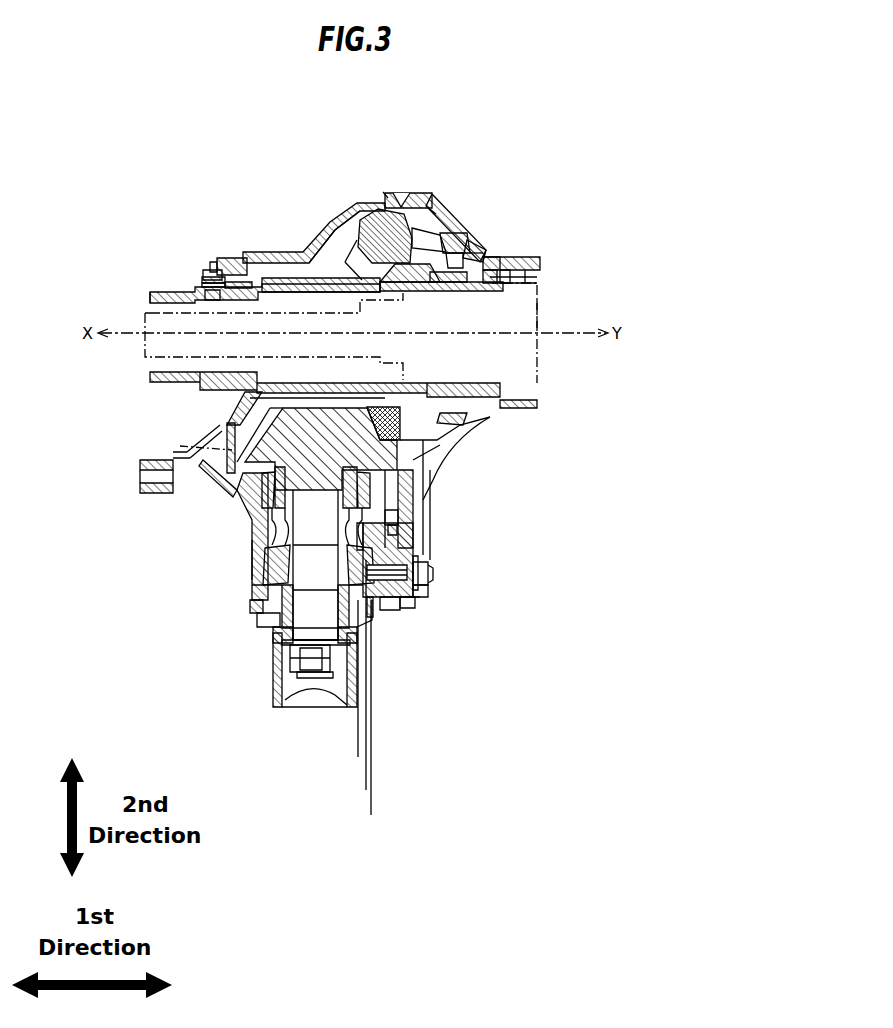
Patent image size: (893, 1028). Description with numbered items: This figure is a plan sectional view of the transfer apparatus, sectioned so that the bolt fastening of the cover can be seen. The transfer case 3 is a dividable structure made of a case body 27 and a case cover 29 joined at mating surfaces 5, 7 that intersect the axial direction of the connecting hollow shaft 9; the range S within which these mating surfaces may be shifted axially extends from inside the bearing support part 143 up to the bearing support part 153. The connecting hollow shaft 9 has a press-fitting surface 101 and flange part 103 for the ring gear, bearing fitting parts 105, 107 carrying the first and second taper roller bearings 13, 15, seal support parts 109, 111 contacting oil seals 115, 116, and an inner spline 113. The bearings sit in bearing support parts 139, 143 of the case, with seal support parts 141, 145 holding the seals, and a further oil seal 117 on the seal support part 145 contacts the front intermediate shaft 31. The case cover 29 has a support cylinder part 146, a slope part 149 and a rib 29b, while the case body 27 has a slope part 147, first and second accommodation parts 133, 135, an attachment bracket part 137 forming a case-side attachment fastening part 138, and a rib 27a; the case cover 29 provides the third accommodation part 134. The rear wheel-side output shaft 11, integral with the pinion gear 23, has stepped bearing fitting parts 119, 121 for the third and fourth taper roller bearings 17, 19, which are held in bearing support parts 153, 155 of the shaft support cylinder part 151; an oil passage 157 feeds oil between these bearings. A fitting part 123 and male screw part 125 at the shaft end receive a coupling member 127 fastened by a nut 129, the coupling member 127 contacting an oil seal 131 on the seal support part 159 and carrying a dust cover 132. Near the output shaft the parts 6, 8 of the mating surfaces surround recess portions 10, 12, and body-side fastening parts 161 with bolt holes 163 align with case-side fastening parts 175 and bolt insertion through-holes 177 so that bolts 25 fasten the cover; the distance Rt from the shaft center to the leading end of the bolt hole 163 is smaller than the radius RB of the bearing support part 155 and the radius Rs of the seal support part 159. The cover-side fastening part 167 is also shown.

The transfer case 3 is at (270, 246).
The mating surface 5 is at (410, 194).
The part of mating surface 6 is at (413, 556).
The mating surface 7 is at (395, 197).
The part of mating surface 8 is at (430, 590).
The connecting hollow shaft 9 is at (303, 274).
The recess portion 10 is at (400, 505).
The rear wheel-side output shaft 11 is at (328, 539).
The recess portion 12 is at (395, 506).
The first taper roller bearing 13 is at (207, 265).
The second taper roller bearing 15 is at (497, 266).
The third taper roller bearing 17 is at (255, 500).
The fourth taper roller bearing 19 is at (253, 613).
The pinion gear 23 is at (225, 422).
The bolt 25 is at (430, 575).
The case body 27 is at (237, 257).
The rib 27a is at (210, 462).
The case cover 29 is at (470, 257).
The rib 29b is at (413, 458).
The front intermediate shaft 31 is at (540, 322).
The press-fitting surface 101 is at (387, 268).
The flange part 103 is at (440, 235).
The bearing fitting part 105 is at (240, 302).
The bearing fitting part 107 is at (453, 288).
The seal support part 109 is at (212, 302).
The seal support part 111 is at (490, 282).
The inner spline 113 is at (150, 298).
The oil seal 115 is at (203, 285).
The oil seal 116 is at (527, 263).
The oil seal 117 is at (540, 268).
The bearing fitting part 119 is at (427, 472).
The bearing fitting part 121 is at (395, 522).
The fitting part 123 is at (290, 655).
The male screw part 125 is at (300, 705).
The coupling member 127 is at (273, 700).
The nut 129 is at (300, 665).
The oil seal 131 is at (272, 635).
The dust cover 132 is at (258, 627).
The first accommodation part 133 is at (347, 240).
The third accommodation part 134 is at (437, 467).
The second accommodation part 135 is at (245, 475).
The attachment bracket part 137 is at (180, 446).
The case-side attachment fastening part 138 is at (140, 487).
The bearing support part 139 is at (233, 263).
The seal support part 141 is at (210, 275).
The bearing support part 143 is at (477, 250).
The seal support part 145 is at (517, 277).
The support cylinder part 146 is at (507, 267).
The slope part 147 is at (333, 243).
The slope part 149 is at (457, 241).
The shaft support cylinder part 151 is at (252, 560).
The bearing support part 153 is at (413, 492).
The bearing support part 155 is at (410, 548).
The oil passage 157 is at (400, 528).
The seal support part 159 is at (380, 607).
The body-side fastening part 161 is at (382, 194).
The bolt hole 163 is at (420, 600).
The cover-side fastening part 167 is at (430, 200).
The case-side fastening part 175 is at (415, 605).
The bolt insertion through-hole 177 is at (428, 566).
The range S is at (440, 215).
The distance Rt is at (356, 745).
The radius RB is at (364, 777).
The radius Rs is at (369, 806).